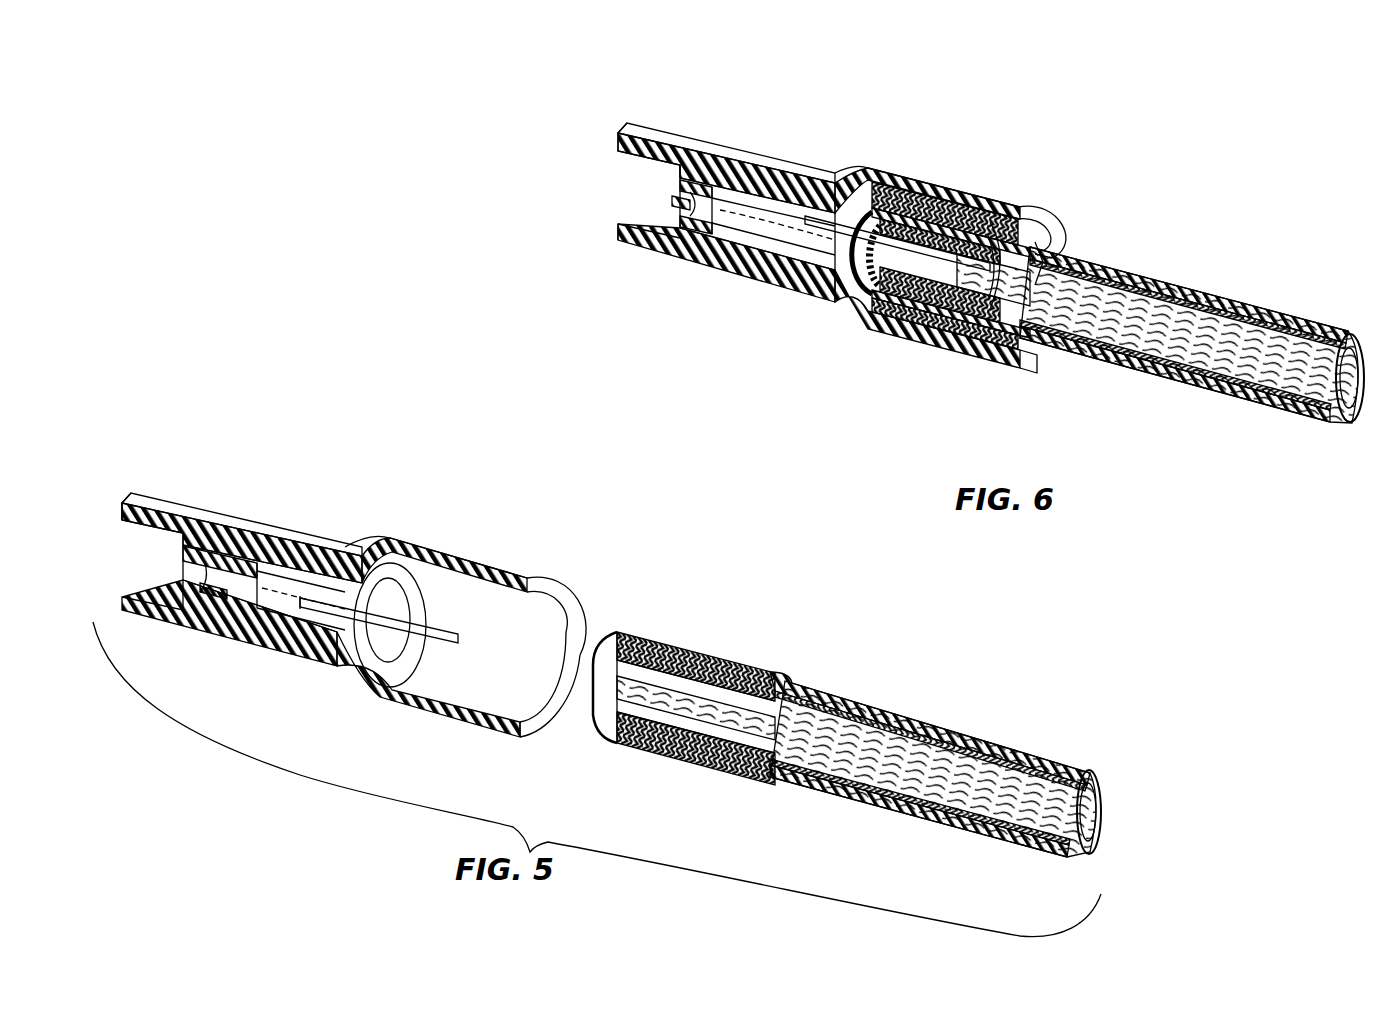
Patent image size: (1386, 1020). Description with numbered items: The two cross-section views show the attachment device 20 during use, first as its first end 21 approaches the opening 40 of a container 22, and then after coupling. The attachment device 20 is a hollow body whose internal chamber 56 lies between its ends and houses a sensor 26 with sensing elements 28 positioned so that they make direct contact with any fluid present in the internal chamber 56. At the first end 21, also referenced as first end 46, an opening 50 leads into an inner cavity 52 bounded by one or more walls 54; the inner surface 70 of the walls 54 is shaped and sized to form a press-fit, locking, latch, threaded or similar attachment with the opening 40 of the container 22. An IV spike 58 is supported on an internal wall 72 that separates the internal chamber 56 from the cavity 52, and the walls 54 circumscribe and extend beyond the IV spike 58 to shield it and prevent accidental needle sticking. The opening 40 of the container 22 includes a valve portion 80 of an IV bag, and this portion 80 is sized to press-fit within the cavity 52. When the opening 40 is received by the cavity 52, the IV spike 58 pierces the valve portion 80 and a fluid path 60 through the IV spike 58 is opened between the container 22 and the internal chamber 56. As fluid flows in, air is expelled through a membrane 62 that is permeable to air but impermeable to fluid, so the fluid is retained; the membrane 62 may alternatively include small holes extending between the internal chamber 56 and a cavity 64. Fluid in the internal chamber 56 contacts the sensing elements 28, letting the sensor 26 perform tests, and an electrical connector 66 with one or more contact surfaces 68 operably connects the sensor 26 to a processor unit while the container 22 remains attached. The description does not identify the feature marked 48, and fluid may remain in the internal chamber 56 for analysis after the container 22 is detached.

In FIG. 6, the attachment device 20 is at (935, 186).
In FIG. 5, the attachment device 20 is at (292, 535).
In FIG. 6, the first end 21 is at (663, 137).
In FIG. 5, the first end 21 is at (353, 535).
In FIG. 6, the container 22 is at (1205, 288).
In FIG. 5, the container 22 is at (887, 722).
In FIG. 6, the sensor 26 is at (730, 220).
In FIG. 5, the sensor 26 is at (231, 628).
In FIG. 6, the sensing elements 28 is at (733, 207).
In FIG. 5, the sensing elements 28 is at (240, 560).
In FIG. 6, the opening 40 is at (836, 198).
In FIG. 5, the opening 40 is at (592, 683).
In FIG. 6, the first end 46 is at (1055, 206).
In FIG. 5, the first end 46 is at (540, 573).
In FIG. 6, the flange end 48 is at (608, 245).
In FIG. 5, the flange end 48 is at (130, 492).
In FIG. 5, the opening 50 is at (532, 632).
In FIG. 5, the inner cavity 52 is at (519, 612).
In FIG. 6, the walls 54 is at (1017, 198).
In FIG. 5, the walls 54 is at (508, 575).
In FIG. 6, the internal chamber 56 is at (763, 207).
In FIG. 5, the internal chamber 56 is at (262, 583).
In FIG. 6, the IV spike 58 is at (907, 218).
In FIG. 5, the IV spike 58 is at (411, 612).
In FIG. 6, the fluid path 60 is at (988, 265).
In FIG. 5, the fluid path 60 is at (457, 622).
In FIG. 6, the membrane 62 is at (612, 141).
In FIG. 5, the membrane 62 is at (140, 548).
In FIG. 6, the cavity 64 is at (630, 184).
In FIG. 5, the cavity 64 is at (140, 572).
In FIG. 6, the electrical connector 66 is at (673, 214).
In FIG. 5, the electrical connector 66 is at (178, 600).
In FIG. 6, the contact surfaces 68 is at (672, 206).
In FIG. 5, the contact surfaces 68 is at (200, 590).
In FIG. 6, the inner surface 70 is at (1030, 362).
In FIG. 5, the inner surface 70 is at (540, 723).
In FIG. 6, the internal wall 72 is at (833, 250).
In FIG. 5, the internal wall 72 is at (338, 655).
In FIG. 6, the valve portion 80 is at (1043, 240).
In FIG. 5, the valve portion 80 is at (649, 756).